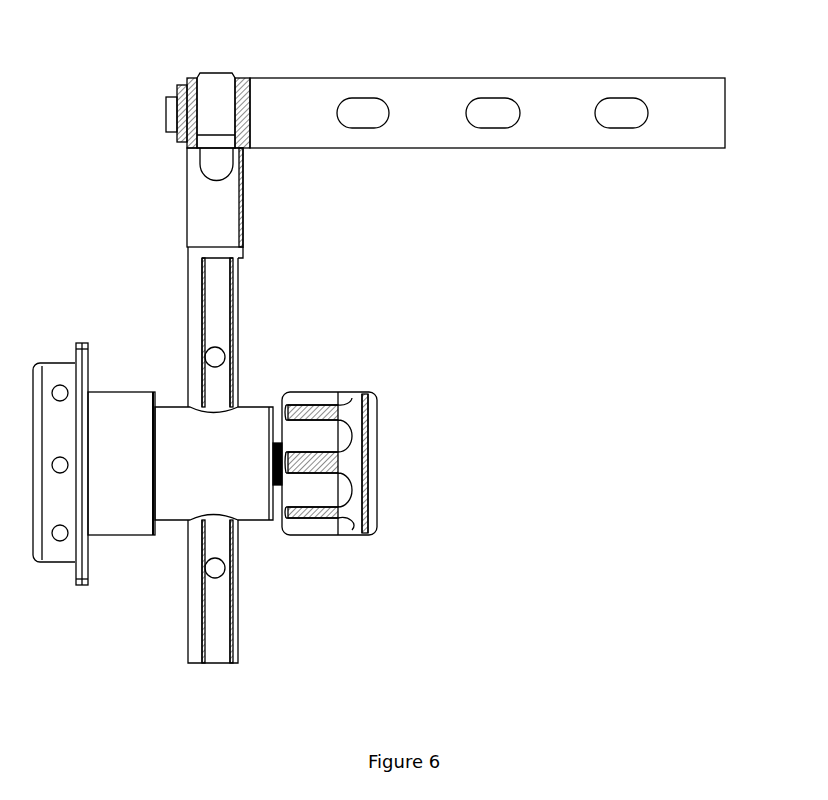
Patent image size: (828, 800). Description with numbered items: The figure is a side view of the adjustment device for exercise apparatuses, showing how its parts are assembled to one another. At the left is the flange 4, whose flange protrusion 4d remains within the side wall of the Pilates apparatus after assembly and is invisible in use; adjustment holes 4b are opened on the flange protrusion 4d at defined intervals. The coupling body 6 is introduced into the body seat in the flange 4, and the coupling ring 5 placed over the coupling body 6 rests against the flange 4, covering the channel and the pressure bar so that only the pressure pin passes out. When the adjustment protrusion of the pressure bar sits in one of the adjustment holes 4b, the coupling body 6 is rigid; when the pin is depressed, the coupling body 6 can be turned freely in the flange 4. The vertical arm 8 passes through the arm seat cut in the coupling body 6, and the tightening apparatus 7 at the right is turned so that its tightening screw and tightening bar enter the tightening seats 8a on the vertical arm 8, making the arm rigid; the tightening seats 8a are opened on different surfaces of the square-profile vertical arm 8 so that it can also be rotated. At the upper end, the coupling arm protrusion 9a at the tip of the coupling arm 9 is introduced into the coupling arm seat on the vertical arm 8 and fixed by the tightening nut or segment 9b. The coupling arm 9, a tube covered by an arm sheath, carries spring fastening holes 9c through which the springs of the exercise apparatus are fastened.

The flange 4 is at (82, 343).
The adjustment holes 4b is at (62, 385).
The flange protrusion 4d is at (43, 565).
The coupling ring 5 is at (110, 505).
The coupling body 6 is at (250, 495).
The tightening apparatus 7 is at (357, 472).
The vertical arm 8 is at (218, 230).
The tightening seats 8a is at (213, 360).
The coupling arm 9 is at (431, 140).
The coupling arm protrusion 9a is at (175, 135).
The tightening nut or segment 9b is at (167, 103).
The spring fastening holes 9c is at (620, 110).